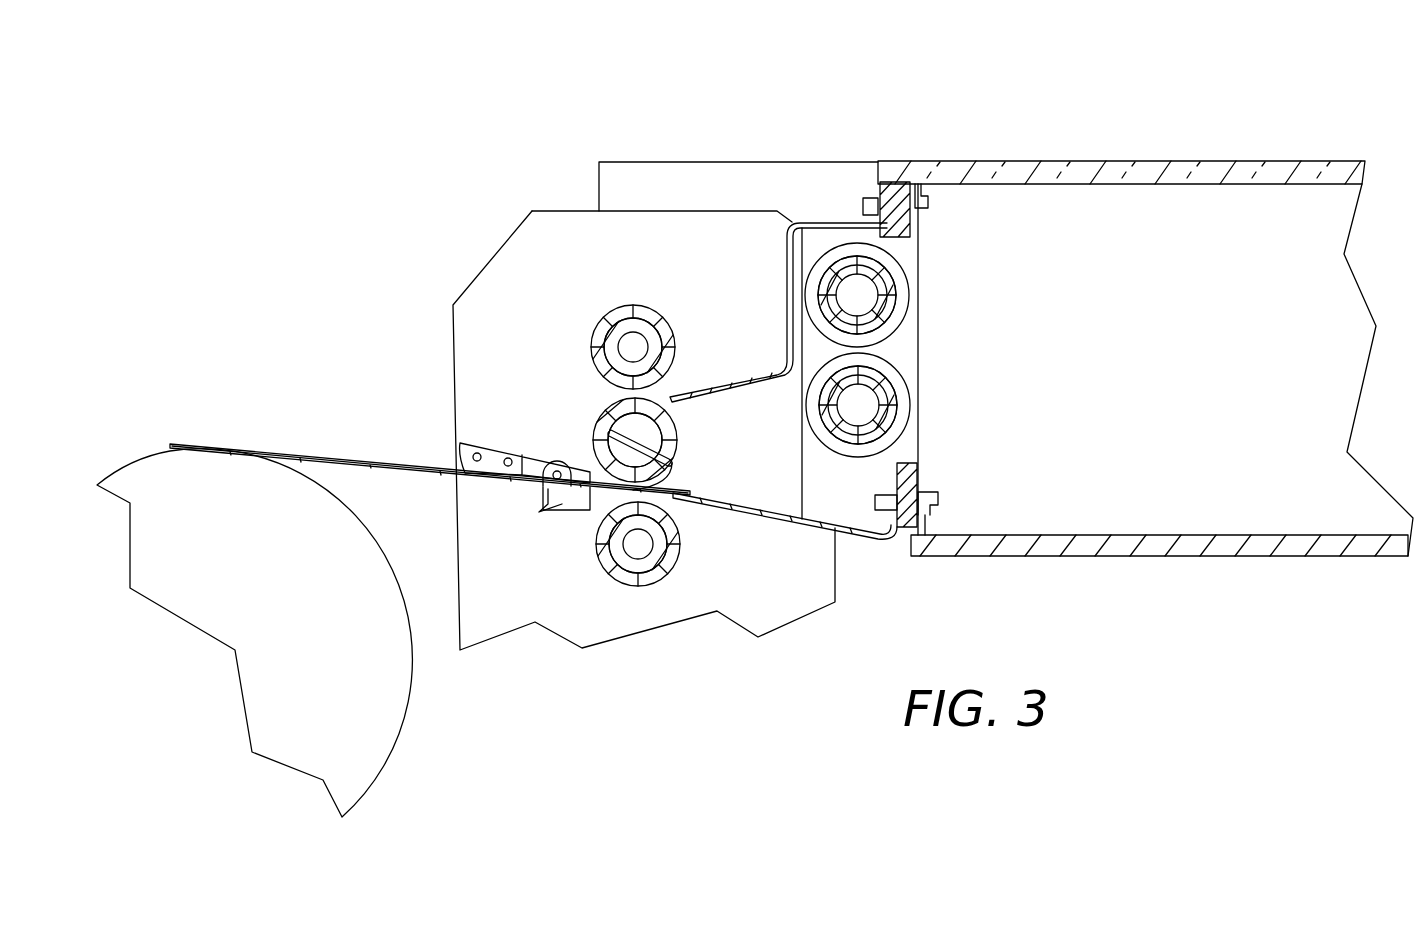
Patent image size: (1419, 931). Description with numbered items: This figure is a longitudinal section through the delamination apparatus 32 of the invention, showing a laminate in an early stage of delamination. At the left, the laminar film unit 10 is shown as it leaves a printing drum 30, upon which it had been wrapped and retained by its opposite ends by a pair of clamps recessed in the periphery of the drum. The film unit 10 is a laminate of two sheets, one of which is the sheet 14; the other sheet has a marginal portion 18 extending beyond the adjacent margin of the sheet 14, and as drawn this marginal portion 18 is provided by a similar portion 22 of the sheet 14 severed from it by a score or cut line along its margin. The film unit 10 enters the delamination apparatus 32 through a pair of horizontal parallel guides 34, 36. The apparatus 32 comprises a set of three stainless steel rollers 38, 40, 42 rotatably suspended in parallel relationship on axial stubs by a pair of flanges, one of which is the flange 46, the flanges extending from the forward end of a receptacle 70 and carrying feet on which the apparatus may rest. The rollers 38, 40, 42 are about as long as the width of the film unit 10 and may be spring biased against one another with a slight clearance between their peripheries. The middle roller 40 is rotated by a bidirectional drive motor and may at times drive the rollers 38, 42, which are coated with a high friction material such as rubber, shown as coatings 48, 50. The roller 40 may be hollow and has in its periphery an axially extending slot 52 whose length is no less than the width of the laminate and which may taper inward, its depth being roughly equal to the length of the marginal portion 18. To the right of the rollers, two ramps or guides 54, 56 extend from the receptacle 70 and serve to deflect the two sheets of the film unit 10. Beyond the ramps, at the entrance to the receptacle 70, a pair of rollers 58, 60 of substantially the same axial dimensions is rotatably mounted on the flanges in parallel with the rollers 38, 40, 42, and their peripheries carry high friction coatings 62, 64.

The film unit 10 is at (320, 448).
The sheet 14 is at (397, 473).
The marginal portion 18 is at (598, 452).
The similar portion 22 is at (672, 432).
The printing drum 30 is at (272, 559).
The delamination apparatus 32 is at (378, 378).
The guide 34 is at (508, 442).
The guide 36 is at (552, 510).
The roller 38 is at (643, 306).
The roller 40 is at (607, 412).
The roller 42 is at (598, 537).
The flange 46 is at (565, 228).
The high friction coating 48 is at (673, 367).
The high friction coating 50 is at (668, 572).
The slot 52 is at (680, 462).
The ramp 54 is at (743, 372).
The ramp 56 is at (758, 520).
The roller 58 is at (918, 306).
The roller 60 is at (890, 372).
The high friction coating 62 is at (893, 321).
The high friction coating 64 is at (846, 446).
The receptacle 70 is at (1081, 161).